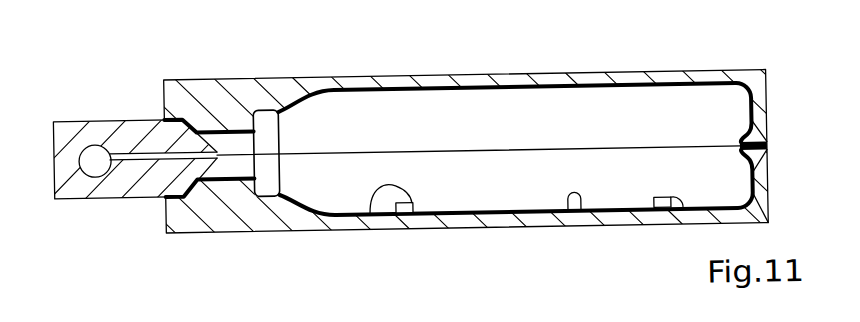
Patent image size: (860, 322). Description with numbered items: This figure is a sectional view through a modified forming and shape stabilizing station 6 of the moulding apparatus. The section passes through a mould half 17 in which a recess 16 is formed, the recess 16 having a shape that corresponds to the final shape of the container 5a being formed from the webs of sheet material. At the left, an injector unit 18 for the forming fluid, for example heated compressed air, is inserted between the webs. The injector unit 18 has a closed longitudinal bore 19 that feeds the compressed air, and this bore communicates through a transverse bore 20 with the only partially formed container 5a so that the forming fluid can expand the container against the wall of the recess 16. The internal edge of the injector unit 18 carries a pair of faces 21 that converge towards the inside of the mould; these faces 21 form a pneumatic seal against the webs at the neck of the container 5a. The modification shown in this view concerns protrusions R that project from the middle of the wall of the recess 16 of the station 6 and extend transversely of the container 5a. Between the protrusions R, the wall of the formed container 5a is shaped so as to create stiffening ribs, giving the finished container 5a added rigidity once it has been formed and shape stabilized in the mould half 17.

The recess 16 is at (432, 73).
The mould half 17 is at (638, 83).
The injector unit 18 is at (110, 92).
The closed longitudinal bore 19 is at (92, 152).
The transverse bore 20 is at (147, 153).
The face 21 is at (187, 130).
The forming and shape stabilizing station 6 is at (481, 238).
The protrusion R is at (371, 217).
The container 5a is at (568, 218).